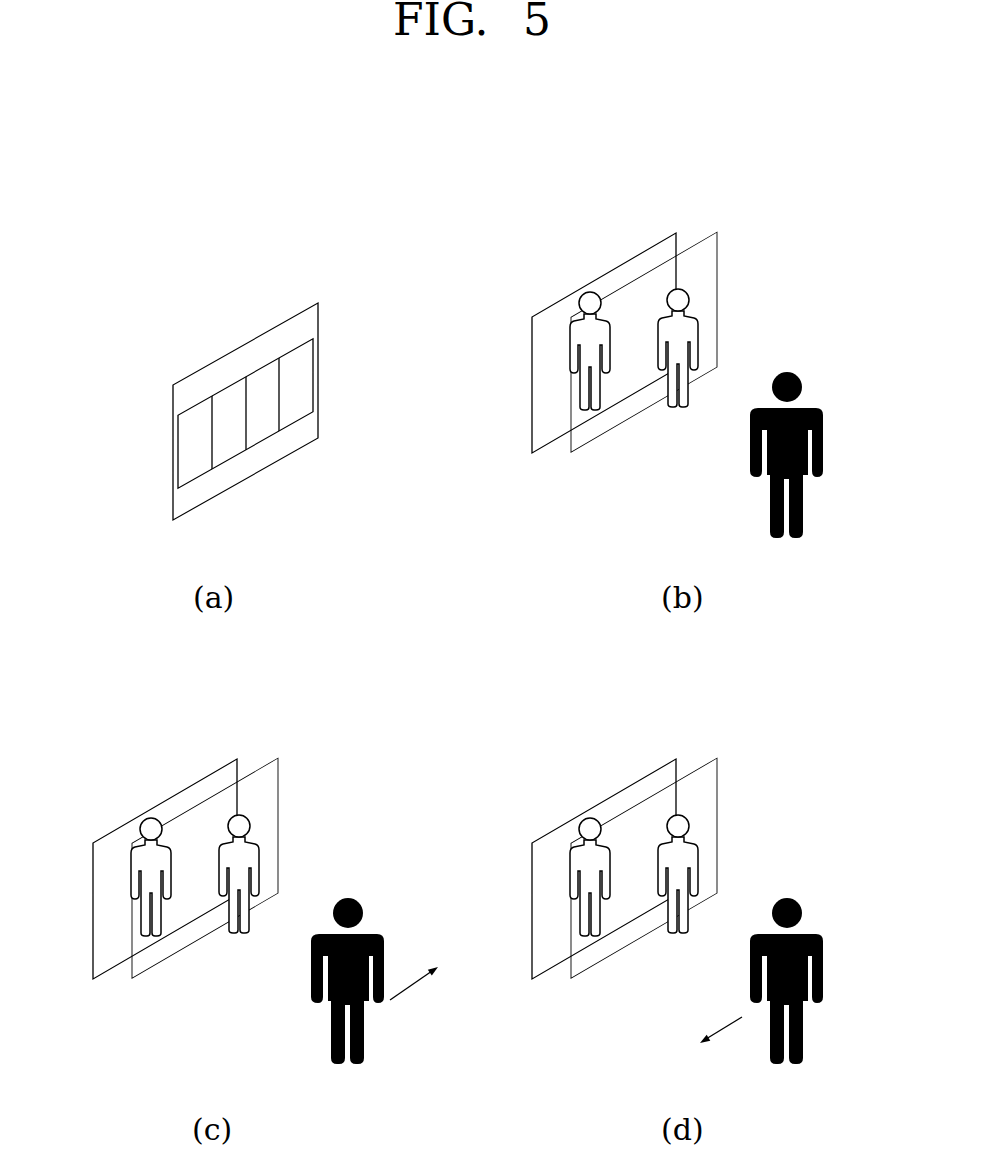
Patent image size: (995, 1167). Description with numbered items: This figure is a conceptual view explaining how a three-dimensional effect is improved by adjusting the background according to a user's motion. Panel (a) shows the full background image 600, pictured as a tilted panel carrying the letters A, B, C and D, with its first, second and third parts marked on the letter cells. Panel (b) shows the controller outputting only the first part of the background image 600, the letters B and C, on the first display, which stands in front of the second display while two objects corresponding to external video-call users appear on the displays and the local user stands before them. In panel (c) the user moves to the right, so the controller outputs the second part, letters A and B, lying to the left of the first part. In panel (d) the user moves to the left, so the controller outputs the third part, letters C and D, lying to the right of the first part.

The background image 600 is at (190, 328).